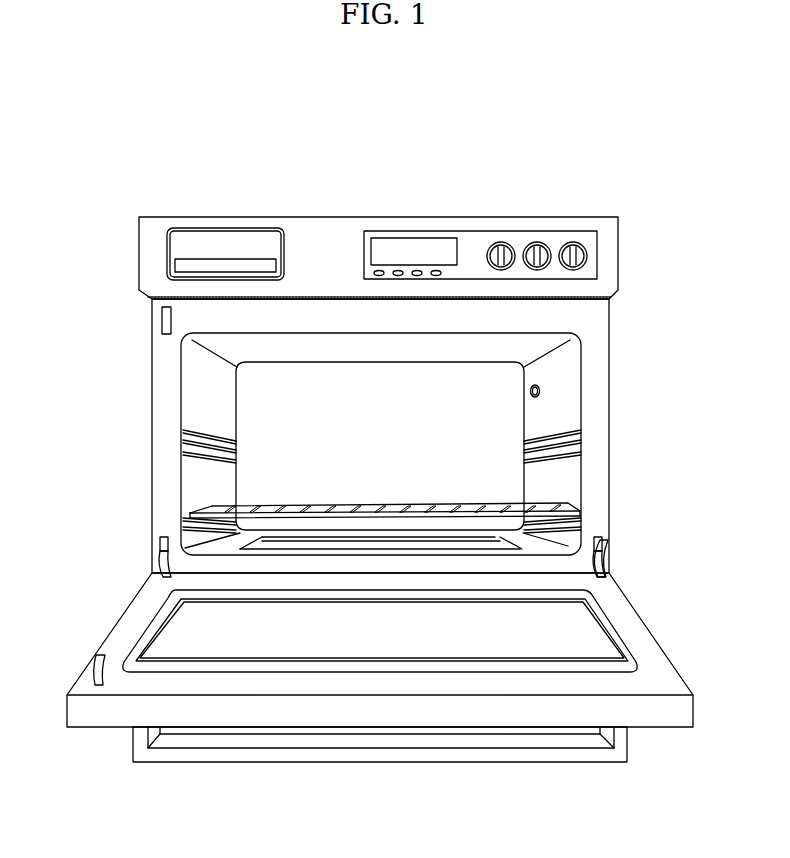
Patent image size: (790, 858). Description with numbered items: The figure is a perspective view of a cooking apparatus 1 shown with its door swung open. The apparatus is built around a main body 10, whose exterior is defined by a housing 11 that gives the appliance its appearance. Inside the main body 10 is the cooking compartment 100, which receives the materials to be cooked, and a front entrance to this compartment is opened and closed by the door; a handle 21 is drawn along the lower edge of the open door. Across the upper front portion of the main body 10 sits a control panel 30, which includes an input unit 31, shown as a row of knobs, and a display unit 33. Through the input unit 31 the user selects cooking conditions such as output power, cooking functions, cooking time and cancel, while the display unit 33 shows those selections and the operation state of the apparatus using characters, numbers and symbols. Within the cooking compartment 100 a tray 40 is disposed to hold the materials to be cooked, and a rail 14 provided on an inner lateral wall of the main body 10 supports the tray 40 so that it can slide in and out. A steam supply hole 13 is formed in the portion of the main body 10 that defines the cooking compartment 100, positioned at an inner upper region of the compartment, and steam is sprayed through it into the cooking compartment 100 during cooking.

The cooking apparatus 1 is at (213, 138).
The main body 10 is at (150, 349).
The housing 11 is at (165, 421).
The steam supply hole 13 is at (540, 395).
The rail 14 is at (580, 520).
The door handle 21 is at (455, 752).
The control panel 30 is at (603, 242).
The input unit 31 is at (507, 245).
The display unit 33 is at (413, 247).
The tray 40 is at (366, 500).
The cooking compartment 100 is at (360, 416).